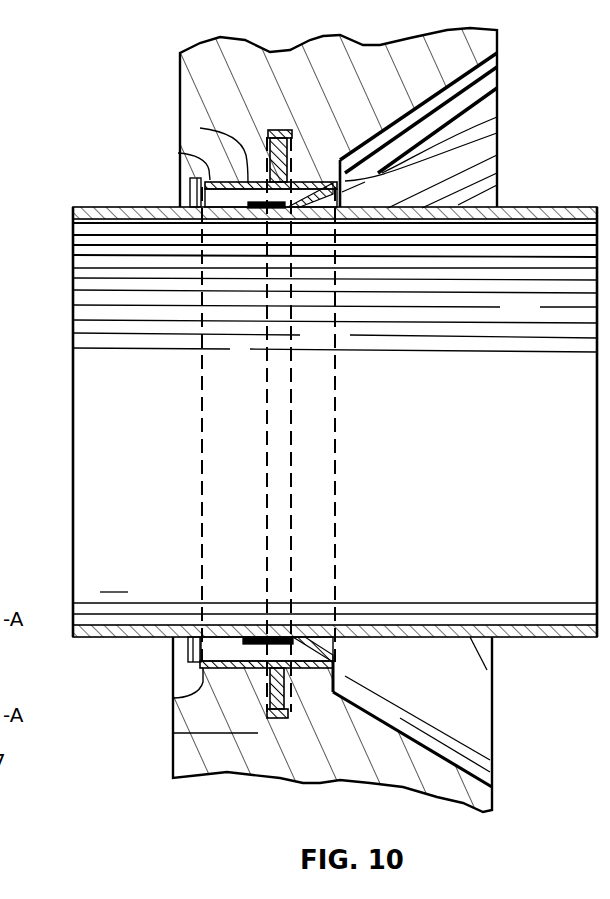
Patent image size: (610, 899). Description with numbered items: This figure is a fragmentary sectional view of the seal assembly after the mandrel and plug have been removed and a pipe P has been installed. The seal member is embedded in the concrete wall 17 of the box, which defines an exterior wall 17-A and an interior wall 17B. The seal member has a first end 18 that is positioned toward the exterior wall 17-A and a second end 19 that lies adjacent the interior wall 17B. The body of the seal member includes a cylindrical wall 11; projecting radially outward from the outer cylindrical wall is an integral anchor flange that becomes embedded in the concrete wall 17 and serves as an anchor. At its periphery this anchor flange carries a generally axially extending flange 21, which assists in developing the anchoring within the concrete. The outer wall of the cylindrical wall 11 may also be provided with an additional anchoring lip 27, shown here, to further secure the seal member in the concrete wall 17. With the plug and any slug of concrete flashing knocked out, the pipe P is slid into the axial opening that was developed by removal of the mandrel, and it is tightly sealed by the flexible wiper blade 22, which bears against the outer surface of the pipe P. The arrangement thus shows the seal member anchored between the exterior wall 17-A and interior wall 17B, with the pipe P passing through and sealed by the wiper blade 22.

The concrete wall 17 is at (499, 46).
The first end 18 is at (499, 120).
The pipe P is at (566, 208).
The flexible wiper blade 22 is at (262, 212).
The cylindrical wall 11 is at (200, 128).
The anchoring lip 27 is at (178, 153).
The second end 19 is at (192, 177).
The axially extending flange 21 is at (272, 718).
The interior wall 17B is at (172, 768).
The exterior wall 17-A is at (493, 762).